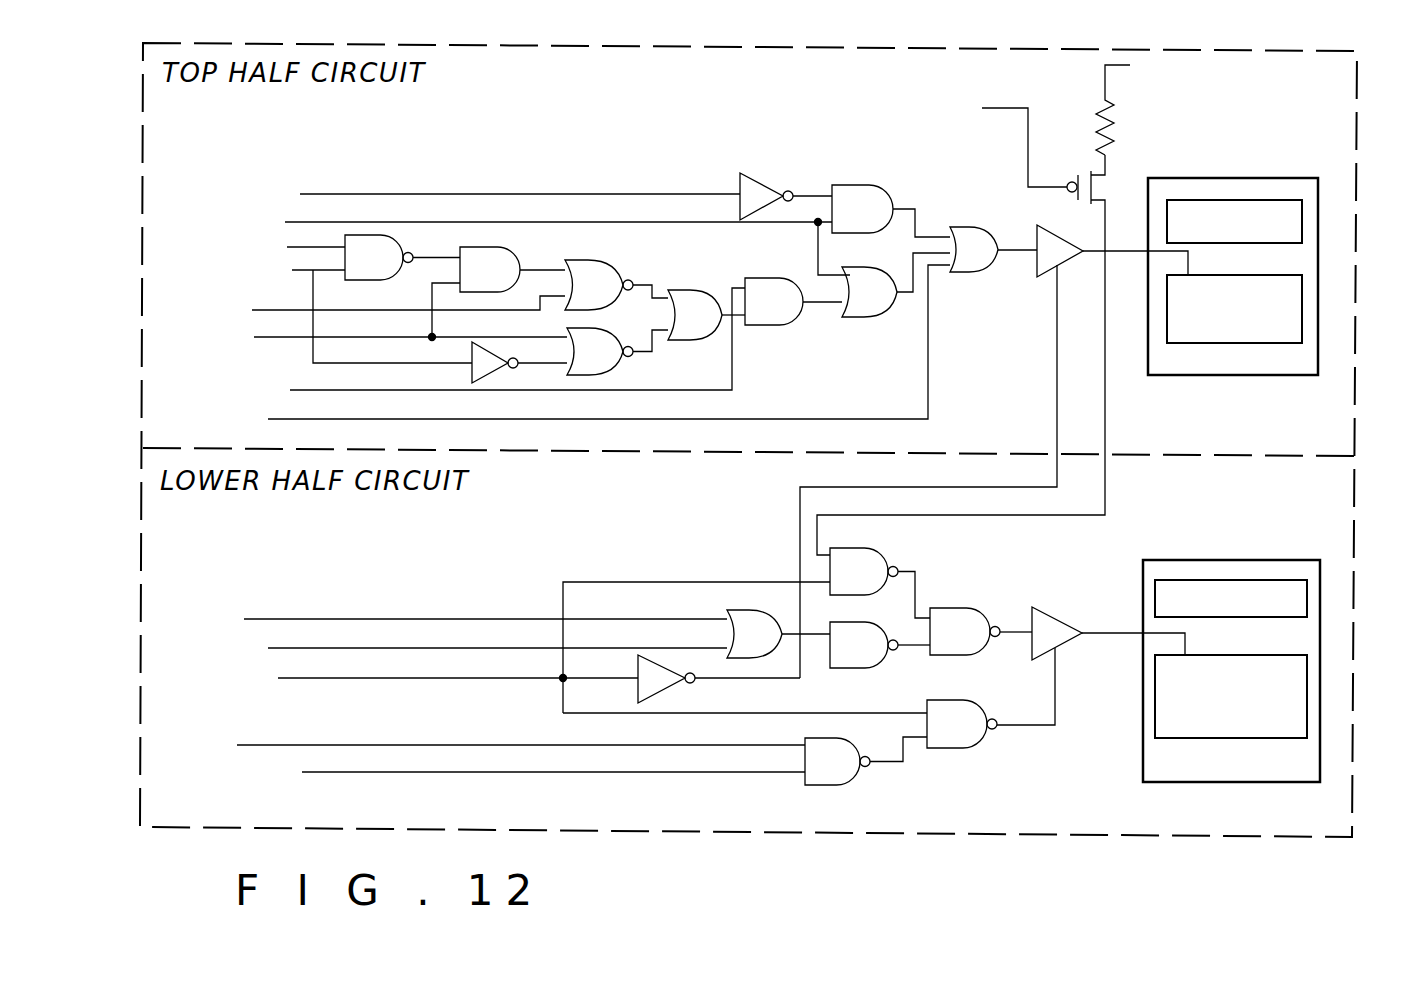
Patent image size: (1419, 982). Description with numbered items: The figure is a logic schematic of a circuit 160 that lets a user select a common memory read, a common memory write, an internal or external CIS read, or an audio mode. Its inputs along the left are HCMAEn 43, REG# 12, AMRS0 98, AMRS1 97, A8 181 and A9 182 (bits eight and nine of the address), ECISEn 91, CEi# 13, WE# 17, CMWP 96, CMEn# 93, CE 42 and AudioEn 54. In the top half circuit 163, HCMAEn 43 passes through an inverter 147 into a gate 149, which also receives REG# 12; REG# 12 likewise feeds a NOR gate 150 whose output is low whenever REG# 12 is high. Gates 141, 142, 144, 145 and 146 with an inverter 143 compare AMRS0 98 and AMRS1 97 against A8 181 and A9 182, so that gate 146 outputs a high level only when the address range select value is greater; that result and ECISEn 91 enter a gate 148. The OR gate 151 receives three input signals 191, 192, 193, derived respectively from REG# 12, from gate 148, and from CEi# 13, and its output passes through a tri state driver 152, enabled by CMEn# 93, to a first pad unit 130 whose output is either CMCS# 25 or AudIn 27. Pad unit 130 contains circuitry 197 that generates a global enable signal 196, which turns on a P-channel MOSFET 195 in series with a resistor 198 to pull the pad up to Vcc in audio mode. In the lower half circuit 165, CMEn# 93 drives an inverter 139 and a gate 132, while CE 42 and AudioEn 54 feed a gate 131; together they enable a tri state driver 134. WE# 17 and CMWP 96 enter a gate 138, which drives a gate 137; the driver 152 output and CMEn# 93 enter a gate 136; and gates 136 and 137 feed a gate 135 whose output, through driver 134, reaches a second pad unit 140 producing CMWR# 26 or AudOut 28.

The REG# signal 12 is at (496, 216).
The CEi# signal 13 is at (555, 345).
The WE# signal 17 is at (443, 613).
The CMCS# signal 25 is at (1234, 309).
The CMWR# signal 26 is at (1231, 696).
The AudIn signal 27 is at (1234, 309).
The AudOut signal 28 is at (1231, 696).
The CE signal 42 is at (482, 739).
The HCMAEn signal 43 is at (450, 188).
The AudioEn signal 54 is at (481, 766).
The ECISEn signal 91 is at (452, 342).
The CMEn# signal 93 is at (543, 647).
The CMWP signal 96 is at (443, 642).
The AMRS1 signal 97 is at (315, 307).
The AMRS0 signal 98 is at (251, 241).
The first pad unit 130 is at (1241, 251).
The gate 131 is at (866, 761).
The gate 132 is at (962, 724).
The tri state driver 134 is at (1091, 666).
The gate 135 is at (981, 631).
The gate 136 is at (880, 583).
The gate 137 is at (880, 645).
The gate 138 is at (778, 634).
The inverter 139 is at (719, 679).
The second pad unit 140 is at (1231, 646).
The gate 141 is at (402, 257).
The gate 142 is at (512, 269).
The inverter 143 is at (519, 362).
The gate 144 is at (616, 285).
The gate 145 is at (617, 351).
The gate 146 is at (706, 315).
The inverter 147 is at (786, 196).
The gate 148 is at (793, 301).
The gate 149 is at (891, 211).
The NOR gate 150 is at (884, 269).
The OR gate 151 is at (993, 249).
The tri state driver 152 is at (994, 451).
The circuit 160 is at (1243, 845).
The top half circuit 163 is at (1358, 199).
The lower half circuit 165 is at (1338, 637).
The A8 address bit 181 is at (361, 305).
The A9 address bit 182 is at (362, 313).
The input signal 191 is at (922, 237).
The input signal 192 is at (936, 240).
The input signal 193 is at (940, 266).
The P-channel MOSFET 195 is at (1109, 190).
The global enable signal 196 is at (957, 138).
The circuitry 197 is at (1212, 205).
The resistor 198 is at (1124, 115).